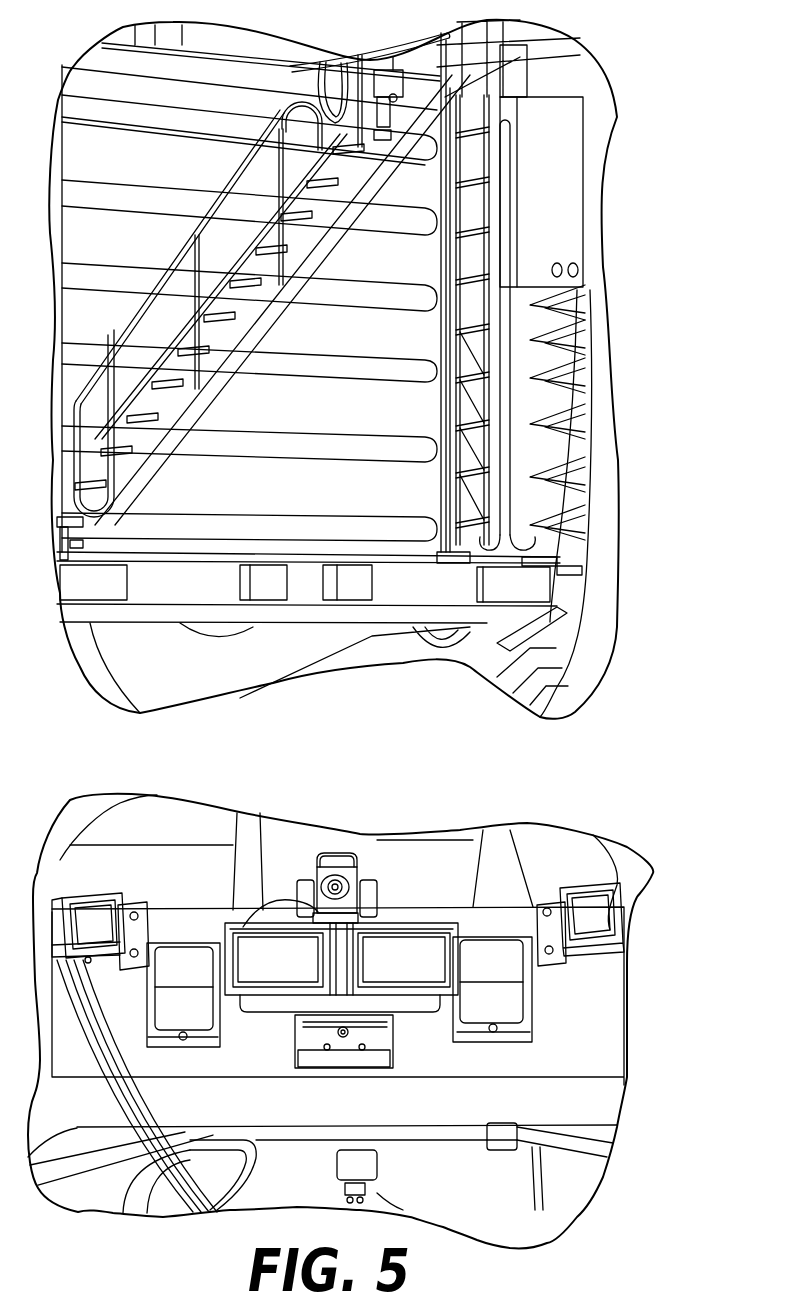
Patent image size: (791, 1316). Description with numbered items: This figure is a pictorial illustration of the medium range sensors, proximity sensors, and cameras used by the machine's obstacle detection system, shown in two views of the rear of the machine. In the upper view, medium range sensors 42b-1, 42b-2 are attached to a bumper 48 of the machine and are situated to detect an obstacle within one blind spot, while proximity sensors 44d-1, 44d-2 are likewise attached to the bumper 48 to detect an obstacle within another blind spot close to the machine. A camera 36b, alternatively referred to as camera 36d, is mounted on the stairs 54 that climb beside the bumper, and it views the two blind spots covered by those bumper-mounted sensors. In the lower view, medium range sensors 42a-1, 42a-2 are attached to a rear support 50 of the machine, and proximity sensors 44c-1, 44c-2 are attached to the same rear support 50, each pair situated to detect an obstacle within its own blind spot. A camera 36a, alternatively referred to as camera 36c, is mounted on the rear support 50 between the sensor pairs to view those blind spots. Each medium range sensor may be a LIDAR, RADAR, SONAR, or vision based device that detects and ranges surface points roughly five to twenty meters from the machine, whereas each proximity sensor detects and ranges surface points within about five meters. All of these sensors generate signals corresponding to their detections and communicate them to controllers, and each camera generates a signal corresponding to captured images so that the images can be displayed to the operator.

The camera 36b is at (370, 77).
The camera 36d is at (388, 70).
The stairs 54 is at (262, 310).
The bumper 48 is at (423, 600).
The medium range sensor 42b-1 is at (270, 583).
The medium range sensor 42b-2 is at (360, 593).
The proximity sensor 44d-1 is at (107, 578).
The proximity sensor 44d-2 is at (537, 583).
The camera 36a is at (351, 858).
The camera 36c is at (358, 895).
The proximity sensor 44c-1 is at (87, 918).
The proximity sensor 44c-2 is at (600, 907).
The medium range sensor 42a-1 is at (278, 960).
The medium range sensor 42a-2 is at (408, 953).
The rear support 50 is at (560, 1048).